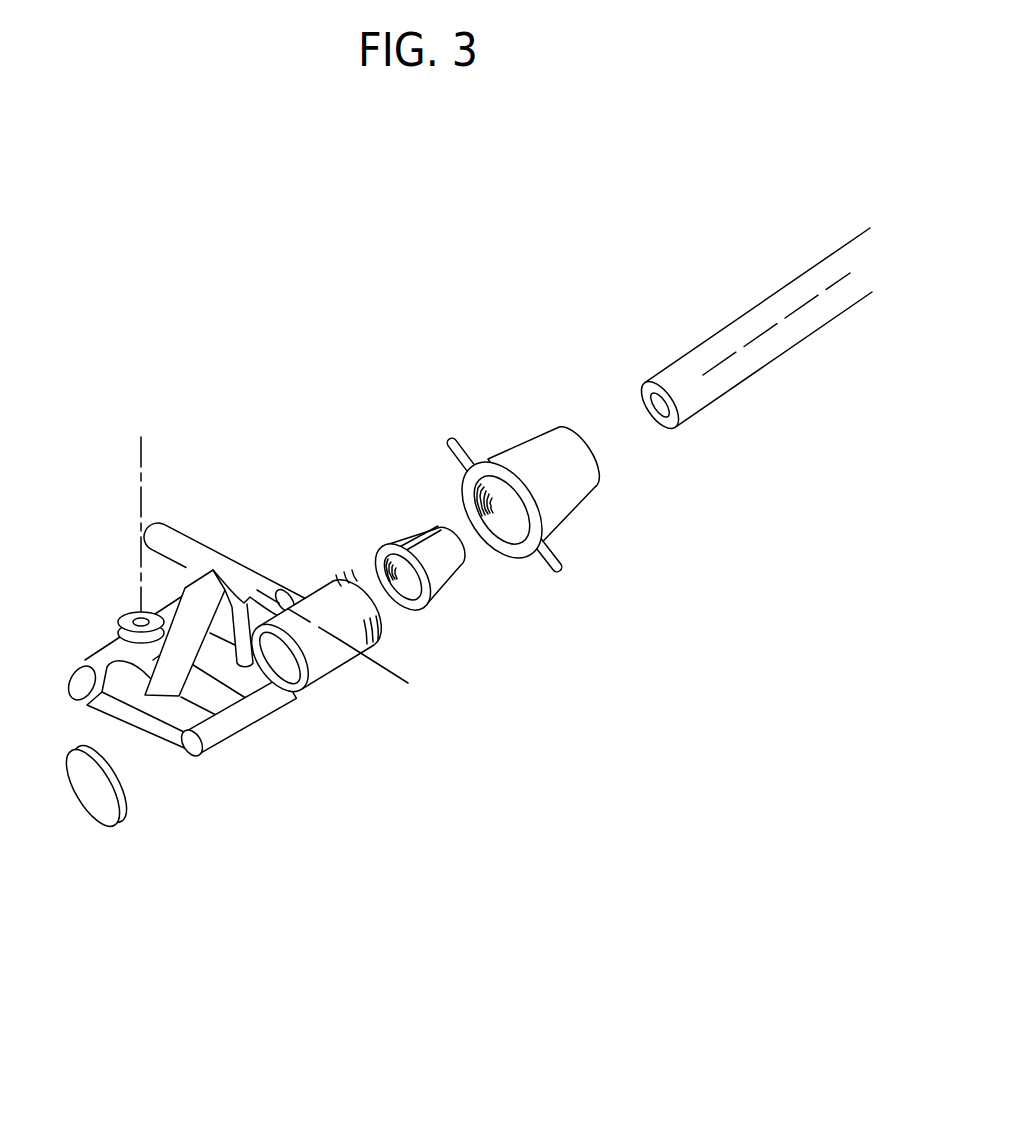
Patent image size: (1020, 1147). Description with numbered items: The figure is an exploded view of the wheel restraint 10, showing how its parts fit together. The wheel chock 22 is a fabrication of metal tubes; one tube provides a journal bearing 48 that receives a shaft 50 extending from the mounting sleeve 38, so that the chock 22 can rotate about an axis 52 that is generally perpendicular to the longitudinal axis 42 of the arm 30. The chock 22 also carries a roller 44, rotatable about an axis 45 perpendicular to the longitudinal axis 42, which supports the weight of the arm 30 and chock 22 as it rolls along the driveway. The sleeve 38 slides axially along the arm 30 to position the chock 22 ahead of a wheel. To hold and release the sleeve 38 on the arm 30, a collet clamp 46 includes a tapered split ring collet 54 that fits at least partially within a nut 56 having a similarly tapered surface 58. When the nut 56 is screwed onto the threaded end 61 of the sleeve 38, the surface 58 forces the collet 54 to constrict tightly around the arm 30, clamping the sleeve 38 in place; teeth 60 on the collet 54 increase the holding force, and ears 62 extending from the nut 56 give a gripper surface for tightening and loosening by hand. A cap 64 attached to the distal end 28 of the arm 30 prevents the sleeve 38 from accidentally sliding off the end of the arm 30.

The wheel restraint 10 is at (230, 682).
The wheel chock 22 is at (93, 656).
The distal end 28 is at (688, 418).
The arm 30 is at (753, 382).
The mounting sleeve 38 is at (330, 678).
The longitudinal axis 42 is at (718, 358).
The roller 44 is at (122, 615).
The axis 45 is at (143, 467).
The collet clamp 46 is at (451, 472).
The journal bearing 48 is at (198, 537).
The shaft 50 is at (287, 592).
The axis 52 is at (383, 673).
The tapered split ring collet 54 is at (412, 612).
The nut 56 is at (530, 540).
The tapered surface 58 is at (502, 508).
The teeth 60 is at (376, 577).
The threaded end 61 is at (330, 565).
The ears 62 is at (537, 567).
The cap 64 is at (95, 800).